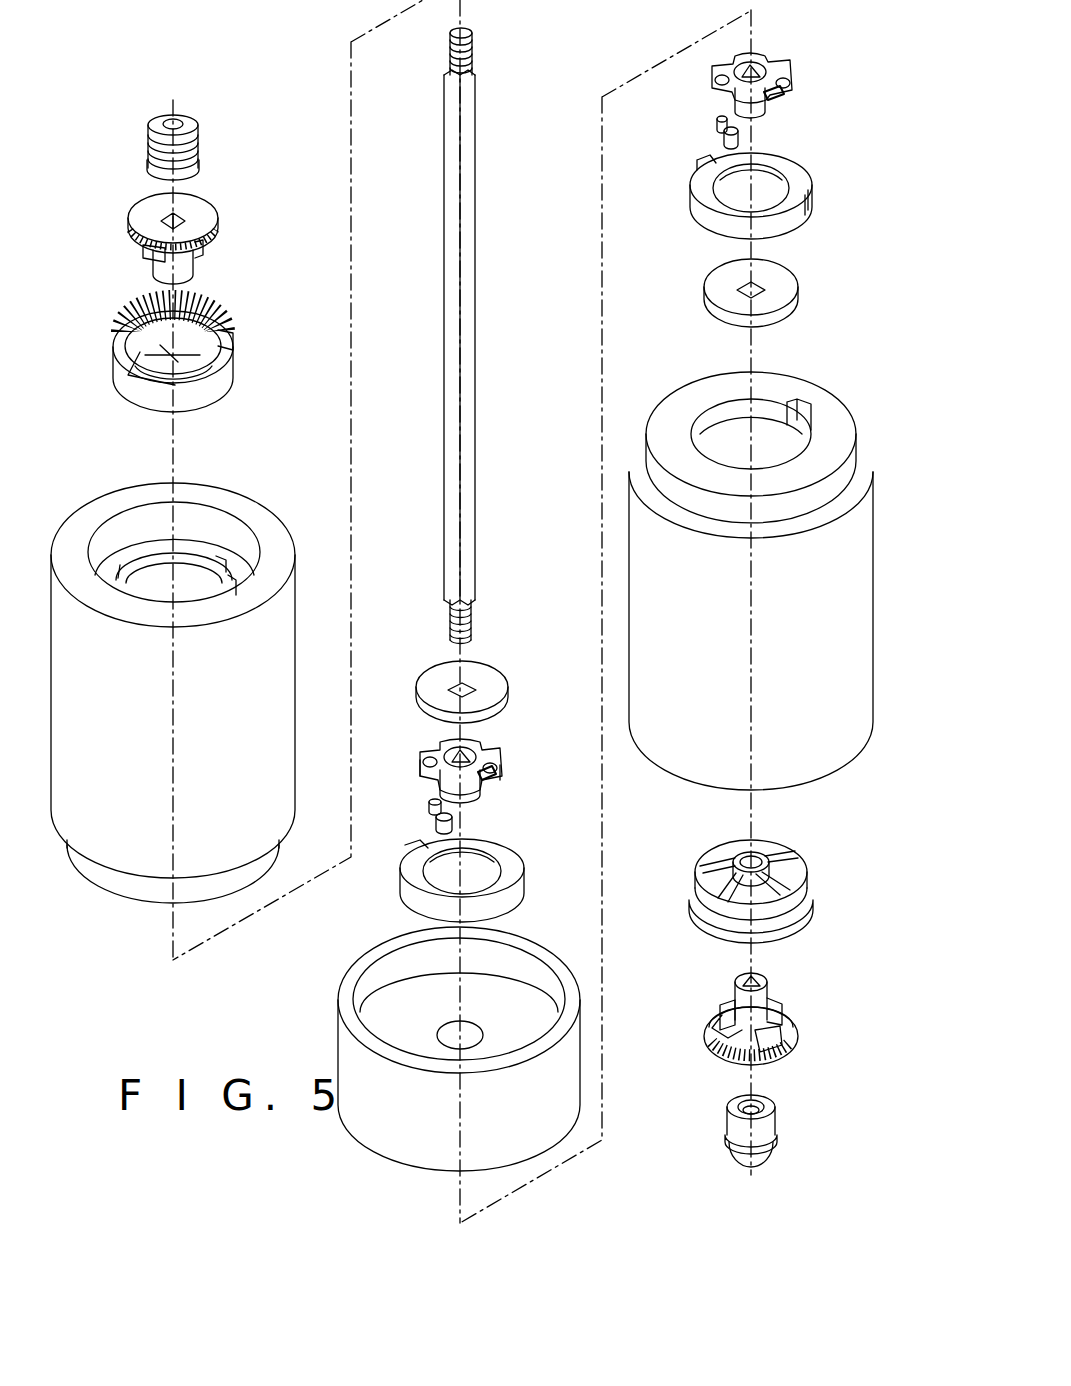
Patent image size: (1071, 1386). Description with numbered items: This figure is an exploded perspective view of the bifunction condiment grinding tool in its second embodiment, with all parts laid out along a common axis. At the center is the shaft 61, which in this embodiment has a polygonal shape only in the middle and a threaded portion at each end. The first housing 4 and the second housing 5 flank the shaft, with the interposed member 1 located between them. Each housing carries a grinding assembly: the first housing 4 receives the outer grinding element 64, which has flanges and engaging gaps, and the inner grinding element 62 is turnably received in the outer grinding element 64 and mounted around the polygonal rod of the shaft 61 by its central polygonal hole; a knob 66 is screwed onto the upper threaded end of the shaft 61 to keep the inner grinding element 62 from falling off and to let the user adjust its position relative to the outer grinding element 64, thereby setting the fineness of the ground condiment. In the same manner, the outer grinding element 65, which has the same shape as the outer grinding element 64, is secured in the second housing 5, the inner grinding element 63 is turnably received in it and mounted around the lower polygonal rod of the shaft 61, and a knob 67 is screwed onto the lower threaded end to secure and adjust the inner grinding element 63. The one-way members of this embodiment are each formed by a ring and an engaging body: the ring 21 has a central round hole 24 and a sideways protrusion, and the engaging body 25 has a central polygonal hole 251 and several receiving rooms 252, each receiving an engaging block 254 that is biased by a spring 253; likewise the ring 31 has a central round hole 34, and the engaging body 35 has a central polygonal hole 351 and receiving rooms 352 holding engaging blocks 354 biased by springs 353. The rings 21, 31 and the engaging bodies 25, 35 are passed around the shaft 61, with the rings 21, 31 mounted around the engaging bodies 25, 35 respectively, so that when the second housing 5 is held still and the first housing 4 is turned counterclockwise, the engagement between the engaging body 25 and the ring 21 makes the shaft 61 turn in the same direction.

The interposed member 1 is at (350, 1060).
The first housing 4 is at (277, 623).
The second housing 5 is at (874, 566).
The ring 21 is at (487, 878).
The central round hole 24 is at (473, 882).
The engaging body 25 is at (469, 732).
The central polygonal hole 251 is at (472, 747).
The receiving rooms 252 is at (440, 777).
The spring 253 is at (428, 808).
The engaging block 254 is at (452, 827).
The ring 31 is at (785, 187).
The central round hole 34 is at (767, 195).
The engaging body 35 is at (760, 61).
The central polygonal hole 351 is at (760, 63).
The receiving rooms 352 is at (728, 88).
The spring 353 is at (715, 118).
The engaging block 354 is at (700, 158).
The shaft 61 is at (475, 290).
The inner grinding element 62 is at (203, 220).
The inner grinding element 63 is at (793, 1023).
The outer grinding element 64 is at (205, 387).
The outer grinding element 65 is at (792, 905).
The knob 66 is at (197, 147).
The knob 67 is at (773, 1143).